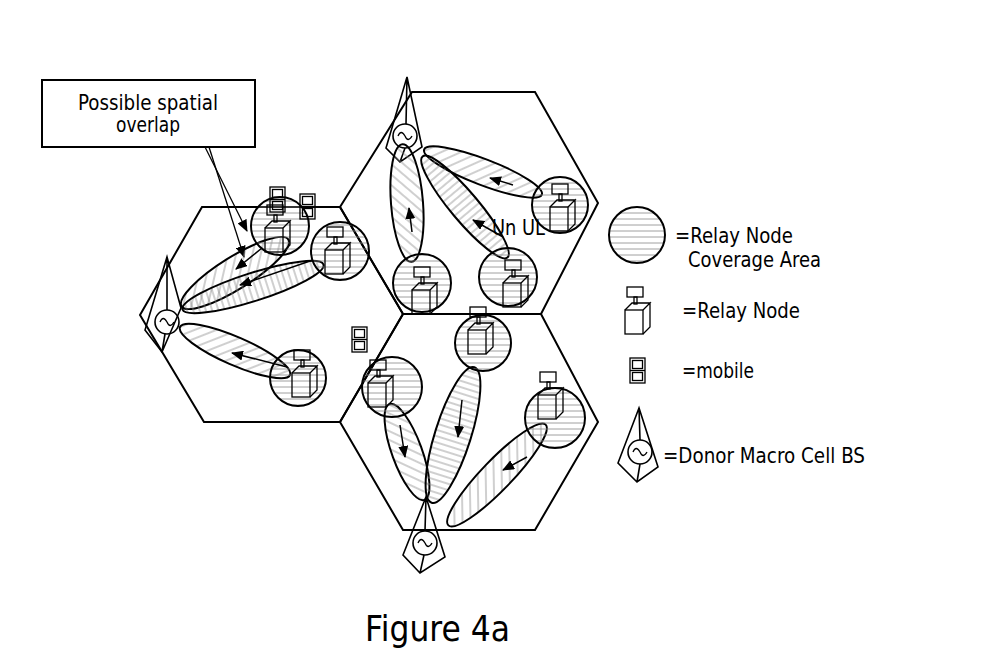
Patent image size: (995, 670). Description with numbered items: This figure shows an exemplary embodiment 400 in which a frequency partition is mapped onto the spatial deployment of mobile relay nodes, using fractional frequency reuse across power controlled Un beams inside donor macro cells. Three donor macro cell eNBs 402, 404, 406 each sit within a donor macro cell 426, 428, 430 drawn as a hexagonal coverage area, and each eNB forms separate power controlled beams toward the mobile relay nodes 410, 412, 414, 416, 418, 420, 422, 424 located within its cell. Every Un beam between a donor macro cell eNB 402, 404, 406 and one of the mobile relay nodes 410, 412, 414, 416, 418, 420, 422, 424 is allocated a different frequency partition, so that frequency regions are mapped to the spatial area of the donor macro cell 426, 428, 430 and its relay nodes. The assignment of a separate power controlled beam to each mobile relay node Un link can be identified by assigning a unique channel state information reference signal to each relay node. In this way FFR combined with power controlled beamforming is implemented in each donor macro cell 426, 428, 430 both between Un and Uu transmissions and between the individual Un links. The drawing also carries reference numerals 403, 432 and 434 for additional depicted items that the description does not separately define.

The exemplary embodiment 400 is at (536, 48).
The donor macro cell eNB 402 is at (157, 337).
The relay node 403 is at (272, 222).
The donor macro cell eNB 404 is at (407, 75).
The donor macro cell eNB 406 is at (442, 562).
The mobile relay node 410 is at (333, 230).
The mobile relay node 412 is at (312, 407).
The mobile relay node 414 is at (575, 207).
The mobile relay node 416 is at (526, 287).
The mobile relay node 418 is at (433, 288).
The mobile relay node 420 is at (397, 410).
The mobile relay node 422 is at (493, 330).
The mobile relay node 424 is at (583, 410).
The donor macro cell 426 is at (203, 422).
The donor macro cell 428 is at (543, 107).
The donor macro cell 430 is at (460, 150).
The mobile 432 is at (296, 258).
The macro cell 434 is at (198, 341).